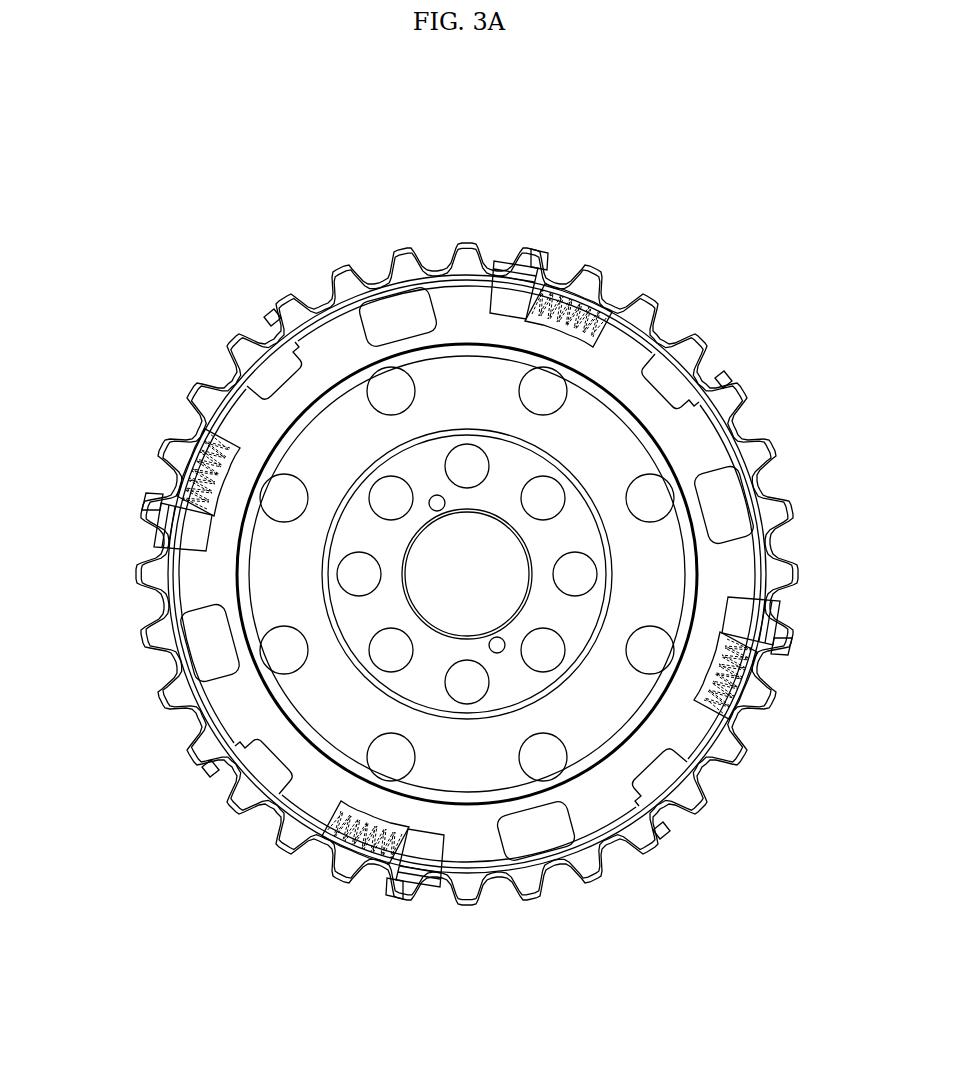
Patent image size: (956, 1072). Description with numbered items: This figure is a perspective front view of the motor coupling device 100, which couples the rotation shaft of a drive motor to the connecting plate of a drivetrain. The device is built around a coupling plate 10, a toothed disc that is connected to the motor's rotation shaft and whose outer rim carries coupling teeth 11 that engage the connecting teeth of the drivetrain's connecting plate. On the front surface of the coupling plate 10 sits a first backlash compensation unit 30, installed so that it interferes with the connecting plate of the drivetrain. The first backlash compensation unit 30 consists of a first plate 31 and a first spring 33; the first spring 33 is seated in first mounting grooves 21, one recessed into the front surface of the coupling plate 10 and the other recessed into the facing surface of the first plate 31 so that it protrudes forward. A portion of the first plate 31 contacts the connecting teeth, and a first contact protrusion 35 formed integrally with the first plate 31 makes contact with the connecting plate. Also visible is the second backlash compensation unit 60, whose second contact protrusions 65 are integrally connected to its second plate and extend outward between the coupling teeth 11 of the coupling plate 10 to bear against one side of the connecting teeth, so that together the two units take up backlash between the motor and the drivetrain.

The motor coupling device 100 is at (441, 192).
The coupling plate 10 is at (273, 592).
The coupling teeth 11 is at (190, 386).
The first mounting groove 21 is at (638, 300).
The first backlash compensation unit 30 is at (562, 267).
The first plate 31 is at (523, 337).
The first spring 33 is at (598, 284).
The first contact protrusion 35 is at (535, 250).
The second backlash compensation unit 60 is at (271, 307).
The second contact protrusion 65 is at (280, 300).